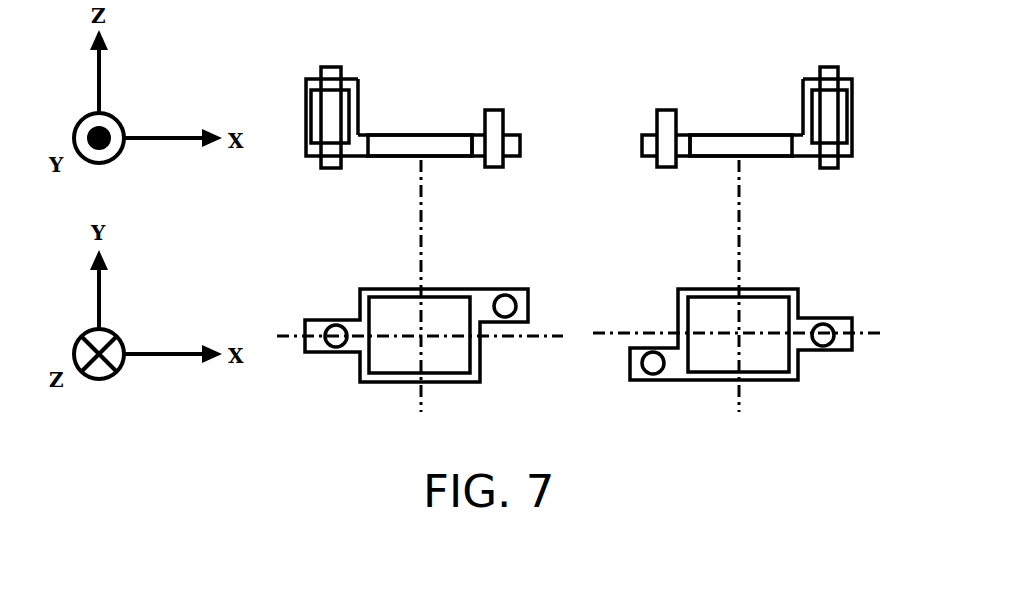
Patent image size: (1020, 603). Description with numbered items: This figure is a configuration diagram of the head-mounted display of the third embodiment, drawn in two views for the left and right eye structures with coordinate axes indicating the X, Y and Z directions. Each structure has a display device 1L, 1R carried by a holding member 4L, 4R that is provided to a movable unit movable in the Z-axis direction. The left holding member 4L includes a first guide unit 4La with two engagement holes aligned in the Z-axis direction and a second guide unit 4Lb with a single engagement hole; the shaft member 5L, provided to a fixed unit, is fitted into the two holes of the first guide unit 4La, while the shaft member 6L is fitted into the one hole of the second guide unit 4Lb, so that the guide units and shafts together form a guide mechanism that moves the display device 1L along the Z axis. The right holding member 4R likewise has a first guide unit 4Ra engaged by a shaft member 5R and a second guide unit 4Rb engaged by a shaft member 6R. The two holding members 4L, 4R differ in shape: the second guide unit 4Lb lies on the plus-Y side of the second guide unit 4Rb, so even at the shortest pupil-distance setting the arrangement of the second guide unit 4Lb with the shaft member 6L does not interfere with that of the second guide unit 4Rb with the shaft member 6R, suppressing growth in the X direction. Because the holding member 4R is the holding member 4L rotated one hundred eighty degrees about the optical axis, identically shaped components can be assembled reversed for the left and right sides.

The display device 1L is at (382, 157).
The display device 1R is at (775, 157).
The holding member 4L is at (306, 156).
The holding member 4R is at (852, 156).
The first guide unit 4La is at (309, 150).
The second guide unit 4Lb is at (522, 143).
The first guide unit 4Ra is at (852, 150).
The second guide unit 4Rb is at (642, 143).
The shaft member 5L is at (331, 67).
The shaft member 5R is at (830, 67).
The shaft member 6L is at (495, 110).
The shaft member 6R is at (661, 110).